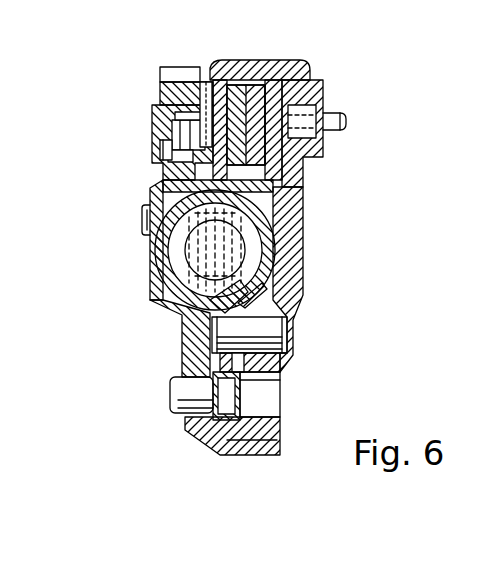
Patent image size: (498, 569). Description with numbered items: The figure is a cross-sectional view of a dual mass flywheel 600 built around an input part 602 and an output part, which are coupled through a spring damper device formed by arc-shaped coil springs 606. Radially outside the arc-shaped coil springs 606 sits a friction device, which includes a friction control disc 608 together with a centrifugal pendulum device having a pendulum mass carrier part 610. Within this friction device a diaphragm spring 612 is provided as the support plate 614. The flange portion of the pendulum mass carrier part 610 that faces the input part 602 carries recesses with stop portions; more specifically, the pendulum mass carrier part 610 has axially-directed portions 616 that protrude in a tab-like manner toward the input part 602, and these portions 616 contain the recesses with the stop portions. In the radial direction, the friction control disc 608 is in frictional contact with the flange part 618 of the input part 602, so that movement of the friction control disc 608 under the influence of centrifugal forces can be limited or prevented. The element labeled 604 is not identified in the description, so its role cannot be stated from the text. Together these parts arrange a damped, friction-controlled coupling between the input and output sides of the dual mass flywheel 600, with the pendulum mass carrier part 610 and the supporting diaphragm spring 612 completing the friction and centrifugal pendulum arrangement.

The dual mass flywheel 600 is at (296, 335).
The input part 602 is at (137, 245).
The housing wall 604 is at (308, 250).
The arc-shaped coil springs 606 is at (172, 283).
The friction control disc 608 is at (160, 138).
The pendulum mass carrier part 610 is at (275, 88).
The diaphragm spring 612 is at (160, 127).
The support plate 614 is at (160, 127).
The axially-directed portions 616 is at (206, 105).
The flange part 618 is at (160, 105).